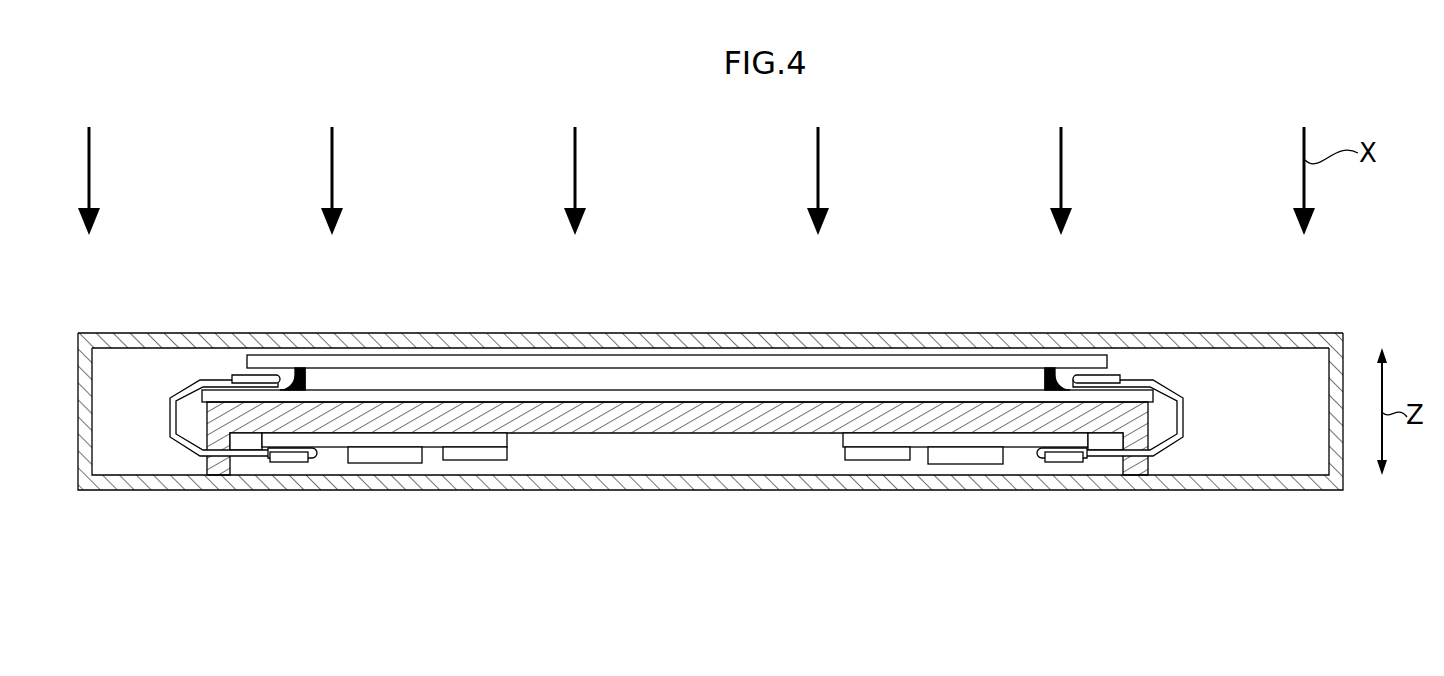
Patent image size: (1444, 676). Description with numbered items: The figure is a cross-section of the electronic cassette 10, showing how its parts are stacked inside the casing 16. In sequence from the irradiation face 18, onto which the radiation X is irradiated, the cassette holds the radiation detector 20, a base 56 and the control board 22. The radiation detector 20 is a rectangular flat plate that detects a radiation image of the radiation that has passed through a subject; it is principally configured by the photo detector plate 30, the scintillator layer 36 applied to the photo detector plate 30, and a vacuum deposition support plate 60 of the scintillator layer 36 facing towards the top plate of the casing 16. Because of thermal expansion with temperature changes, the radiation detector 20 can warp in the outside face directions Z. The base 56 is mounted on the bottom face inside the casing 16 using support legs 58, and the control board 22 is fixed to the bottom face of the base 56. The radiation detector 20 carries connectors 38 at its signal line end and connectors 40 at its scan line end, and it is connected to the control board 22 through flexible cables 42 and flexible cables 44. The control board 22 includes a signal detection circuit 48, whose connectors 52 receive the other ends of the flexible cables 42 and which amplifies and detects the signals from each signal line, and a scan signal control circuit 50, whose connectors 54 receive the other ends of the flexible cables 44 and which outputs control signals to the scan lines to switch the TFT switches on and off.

The electronic cassette 10 is at (1320, 298).
The casing 16 is at (1347, 455).
The irradiation face 18 is at (482, 335).
The radiation detector 20 is at (615, 270).
The control board 22 is at (676, 504).
The photo detector plate 30 is at (632, 395).
The scintillator layer 36 is at (685, 382).
The connectors 38 is at (1117, 376).
The connectors 40 is at (268, 379).
The flexible cables 42 is at (1187, 412).
The flexible cables 44 is at (170, 418).
The signal detection circuit 48 is at (843, 440).
The scan signal control circuit 50 is at (512, 438).
The connectors 52 is at (1057, 463).
The connectors 54 is at (293, 463).
The base 56 is at (333, 425).
The support legs 58 is at (222, 478).
The vacuum deposition support plate 60 is at (750, 362).